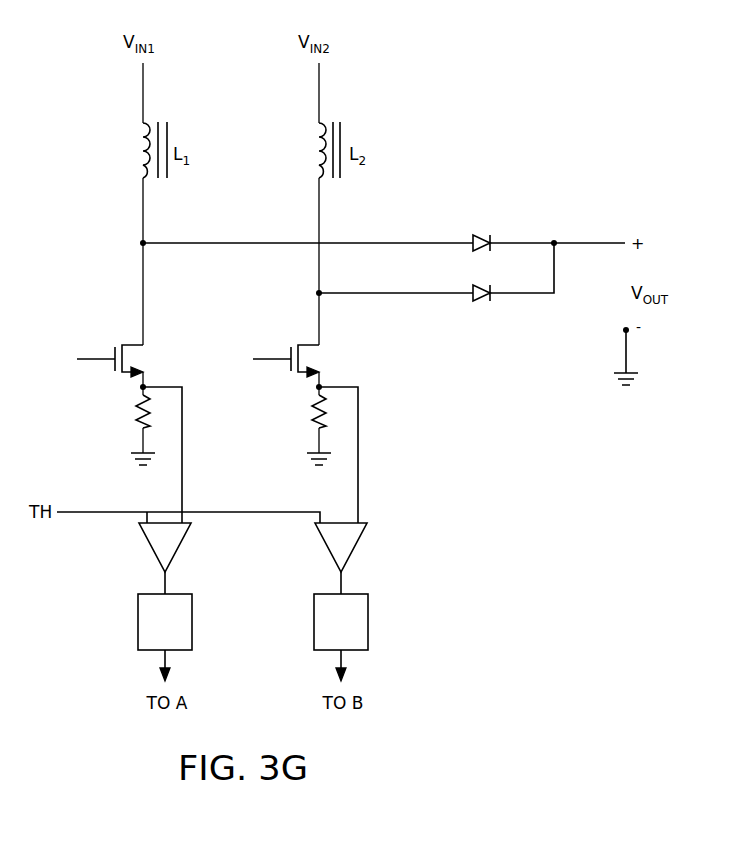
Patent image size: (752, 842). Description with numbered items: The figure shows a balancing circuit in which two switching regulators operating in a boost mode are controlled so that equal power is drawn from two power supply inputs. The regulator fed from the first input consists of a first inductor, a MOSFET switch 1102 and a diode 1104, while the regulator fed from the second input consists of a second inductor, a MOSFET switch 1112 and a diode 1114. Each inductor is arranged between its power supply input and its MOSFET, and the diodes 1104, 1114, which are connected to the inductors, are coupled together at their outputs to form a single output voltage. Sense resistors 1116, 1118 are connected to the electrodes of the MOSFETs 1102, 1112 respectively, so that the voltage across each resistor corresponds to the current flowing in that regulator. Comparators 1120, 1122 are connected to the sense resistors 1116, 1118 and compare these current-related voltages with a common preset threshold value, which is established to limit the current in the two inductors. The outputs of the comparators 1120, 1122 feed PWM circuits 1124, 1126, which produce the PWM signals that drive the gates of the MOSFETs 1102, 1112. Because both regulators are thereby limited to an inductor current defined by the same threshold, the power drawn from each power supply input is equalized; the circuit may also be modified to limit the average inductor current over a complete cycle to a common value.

The MOSFET switch 1102 is at (118, 343).
The MOSFET switch 1112 is at (294, 343).
The diode 1104 is at (480, 232).
The diode 1114 is at (476, 301).
The sense resistor 1116 is at (133, 418).
The sense resistor 1118 is at (309, 418).
The comparator 1120 is at (151, 554).
The comparator 1122 is at (327, 554).
The PWM circuit 1124 is at (138, 616).
The PWM circuit 1126 is at (314, 616).